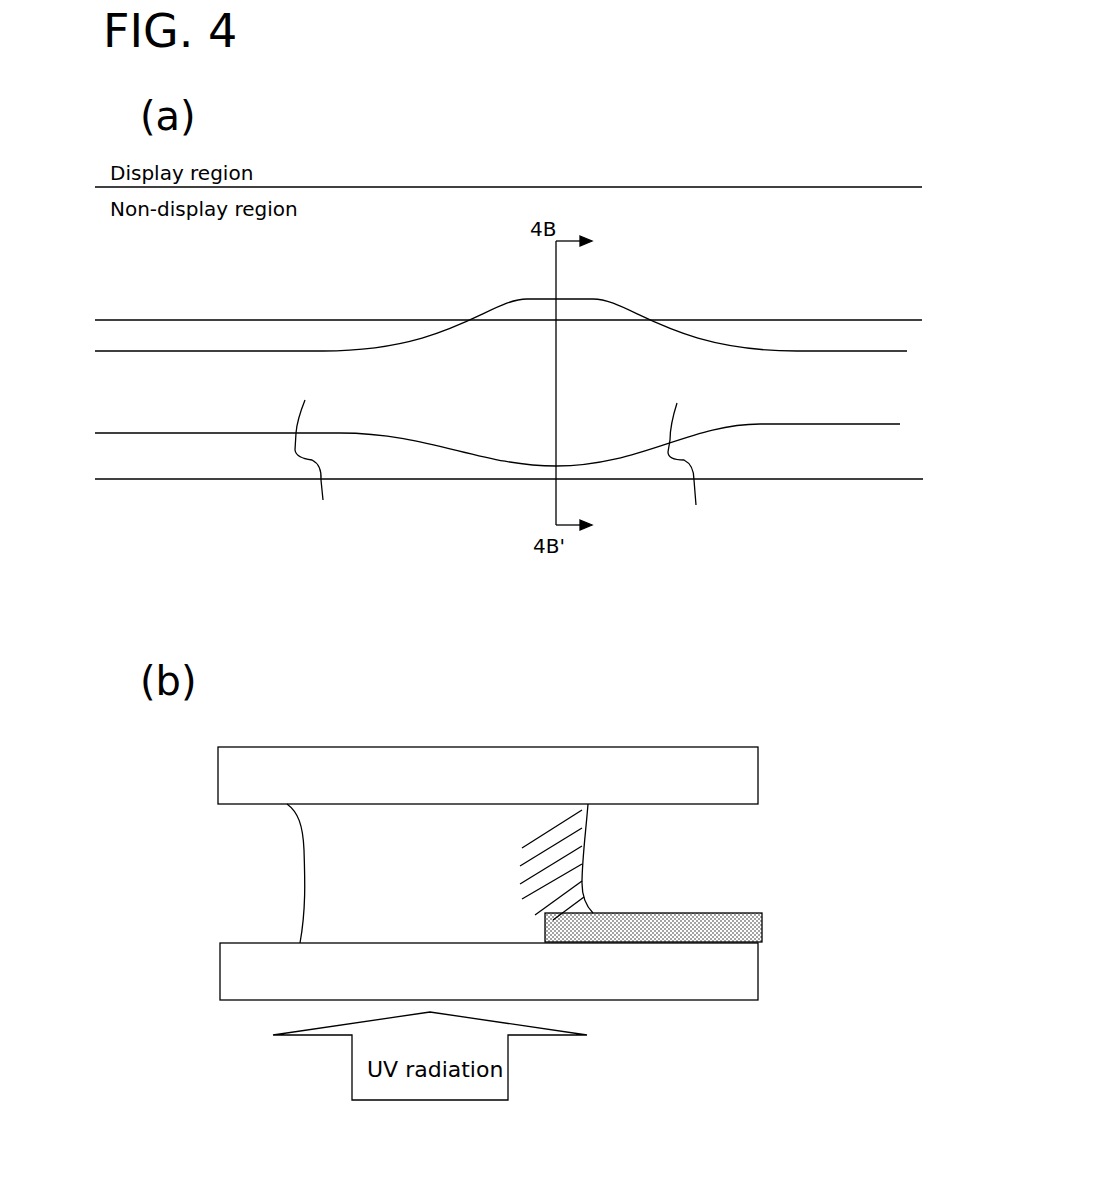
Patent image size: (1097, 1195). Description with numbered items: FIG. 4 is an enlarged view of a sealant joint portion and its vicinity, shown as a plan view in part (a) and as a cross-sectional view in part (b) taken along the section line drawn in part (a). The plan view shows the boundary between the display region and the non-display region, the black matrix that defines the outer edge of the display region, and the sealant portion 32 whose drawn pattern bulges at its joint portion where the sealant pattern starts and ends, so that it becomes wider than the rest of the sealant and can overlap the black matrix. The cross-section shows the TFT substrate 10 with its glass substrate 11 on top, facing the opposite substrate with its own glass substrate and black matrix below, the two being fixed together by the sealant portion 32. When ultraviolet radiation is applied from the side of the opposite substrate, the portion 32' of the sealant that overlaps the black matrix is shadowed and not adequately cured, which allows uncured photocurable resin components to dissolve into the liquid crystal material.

The TFT substrate 10 is at (527, 761).
The glass substrate 11 is at (692, 763).
The sealant portion 32 is at (497, 467).
The portion of the sealant overlapping the black matrix 32' is at (605, 862).